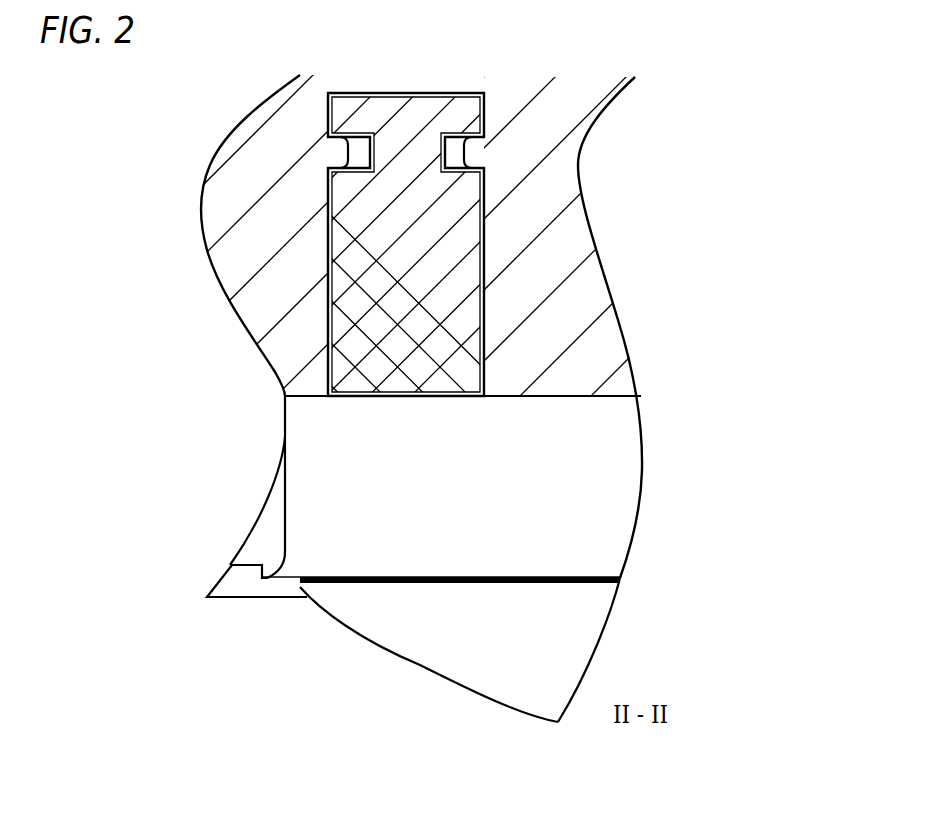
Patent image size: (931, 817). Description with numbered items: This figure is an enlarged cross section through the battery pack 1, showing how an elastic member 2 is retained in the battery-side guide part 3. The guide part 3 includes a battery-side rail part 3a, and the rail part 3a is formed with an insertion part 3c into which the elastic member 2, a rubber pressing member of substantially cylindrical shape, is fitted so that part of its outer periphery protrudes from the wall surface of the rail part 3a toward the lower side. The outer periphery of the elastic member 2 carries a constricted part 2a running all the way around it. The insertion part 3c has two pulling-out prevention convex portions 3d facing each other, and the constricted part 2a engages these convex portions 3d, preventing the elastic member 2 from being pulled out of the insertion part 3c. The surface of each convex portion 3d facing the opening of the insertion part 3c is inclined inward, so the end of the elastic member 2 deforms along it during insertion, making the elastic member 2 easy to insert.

The battery pack 1 is at (606, 632).
The elastic member 2 is at (340, 288).
The constricted part 2a is at (340, 160).
The battery-side guide part 3 is at (465, 289).
The battery-side rail part 3a is at (610, 327).
The insertion part 3c is at (328, 378).
The pulling-out prevention convex portion 3d is at (340, 148).